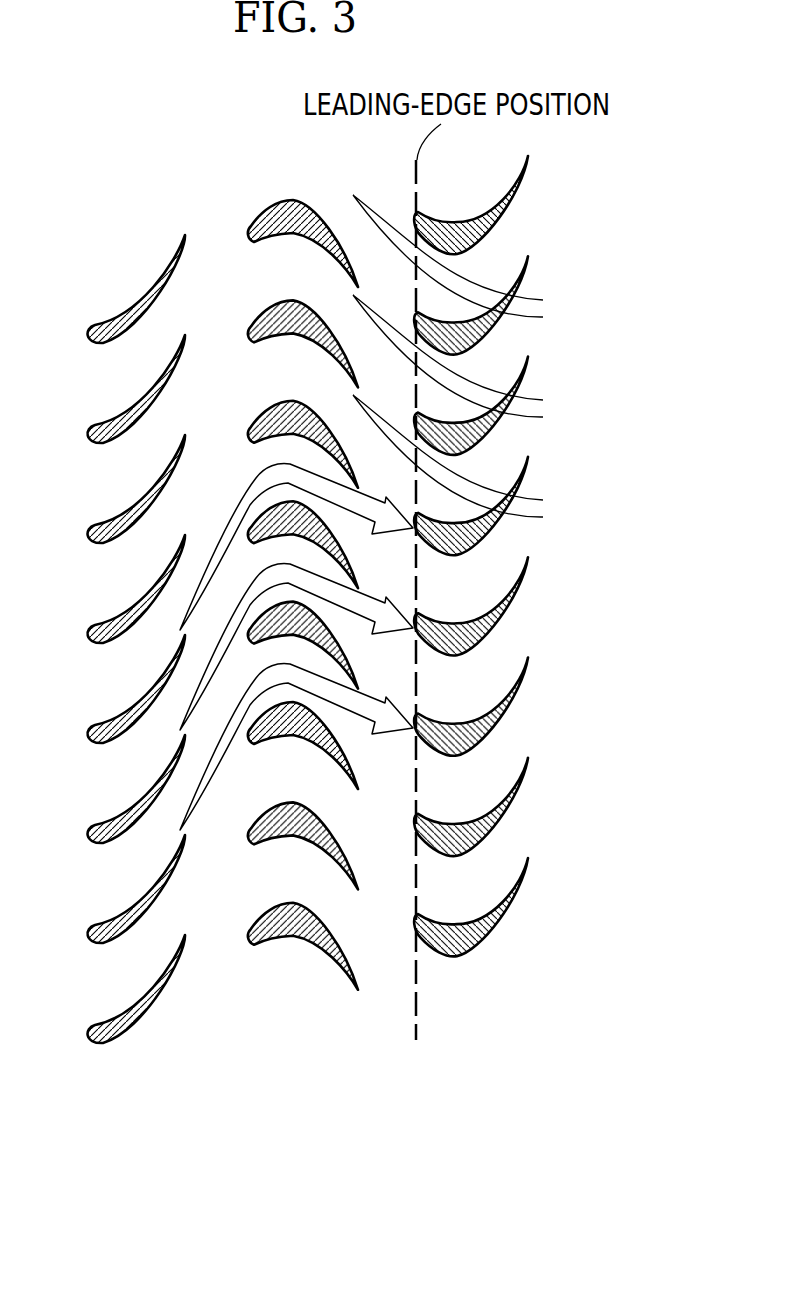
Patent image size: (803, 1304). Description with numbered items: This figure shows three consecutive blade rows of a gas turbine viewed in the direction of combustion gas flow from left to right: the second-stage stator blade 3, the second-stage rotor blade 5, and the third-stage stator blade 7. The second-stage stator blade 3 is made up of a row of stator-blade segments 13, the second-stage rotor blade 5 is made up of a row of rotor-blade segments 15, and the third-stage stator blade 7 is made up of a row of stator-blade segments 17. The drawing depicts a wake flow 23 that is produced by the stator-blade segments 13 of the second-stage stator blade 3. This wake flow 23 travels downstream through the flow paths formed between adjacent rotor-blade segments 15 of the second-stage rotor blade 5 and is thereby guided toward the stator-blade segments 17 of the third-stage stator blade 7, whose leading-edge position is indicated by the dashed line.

The second-stage stator blade 3 is at (116, 710).
The second-stage rotor blade 5 is at (296, 692).
The third-stage stator blade 7 is at (506, 669).
The stator-blade segments 13 is at (92, 727).
The rotor-blade segments 15 is at (277, 807).
The stator-blade segments 17 is at (508, 705).
The wake flow 23 is at (234, 495).